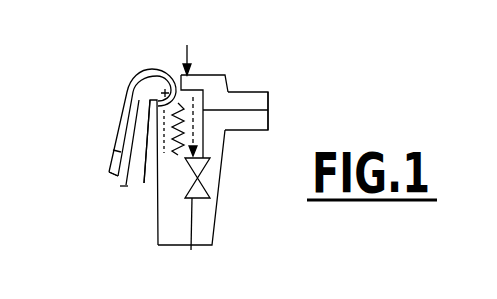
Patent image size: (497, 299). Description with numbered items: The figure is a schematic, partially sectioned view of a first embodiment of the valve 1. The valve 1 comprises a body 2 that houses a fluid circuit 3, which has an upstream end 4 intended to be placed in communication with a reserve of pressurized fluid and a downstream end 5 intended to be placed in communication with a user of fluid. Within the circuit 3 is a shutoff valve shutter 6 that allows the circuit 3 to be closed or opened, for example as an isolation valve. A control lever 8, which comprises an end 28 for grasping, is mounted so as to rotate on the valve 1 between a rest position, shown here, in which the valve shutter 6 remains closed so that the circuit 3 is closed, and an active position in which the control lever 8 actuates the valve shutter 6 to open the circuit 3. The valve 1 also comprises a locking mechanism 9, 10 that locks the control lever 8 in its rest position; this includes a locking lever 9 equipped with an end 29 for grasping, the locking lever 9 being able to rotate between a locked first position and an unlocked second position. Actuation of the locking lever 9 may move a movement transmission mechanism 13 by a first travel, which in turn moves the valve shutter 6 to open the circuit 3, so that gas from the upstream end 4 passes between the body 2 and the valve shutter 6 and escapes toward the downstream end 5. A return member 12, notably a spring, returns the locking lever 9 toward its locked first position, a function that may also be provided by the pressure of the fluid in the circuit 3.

The valve 1 is at (272, 124).
The body 2 is at (210, 213).
The fluid circuit 3 is at (190, 222).
The upstream end 4 is at (187, 250).
The downstream end 5 is at (268, 107).
The shutoff valve shutter 6 is at (200, 180).
The control lever 8 is at (128, 92).
The locking lever 9 is at (115, 147).
The locking mechanism 10 is at (187, 45).
The return member 12 is at (144, 184).
The movement transmission mechanism 13 is at (200, 106).
The end for grasping 28 is at (109, 172).
The end for grasping 29 is at (126, 185).